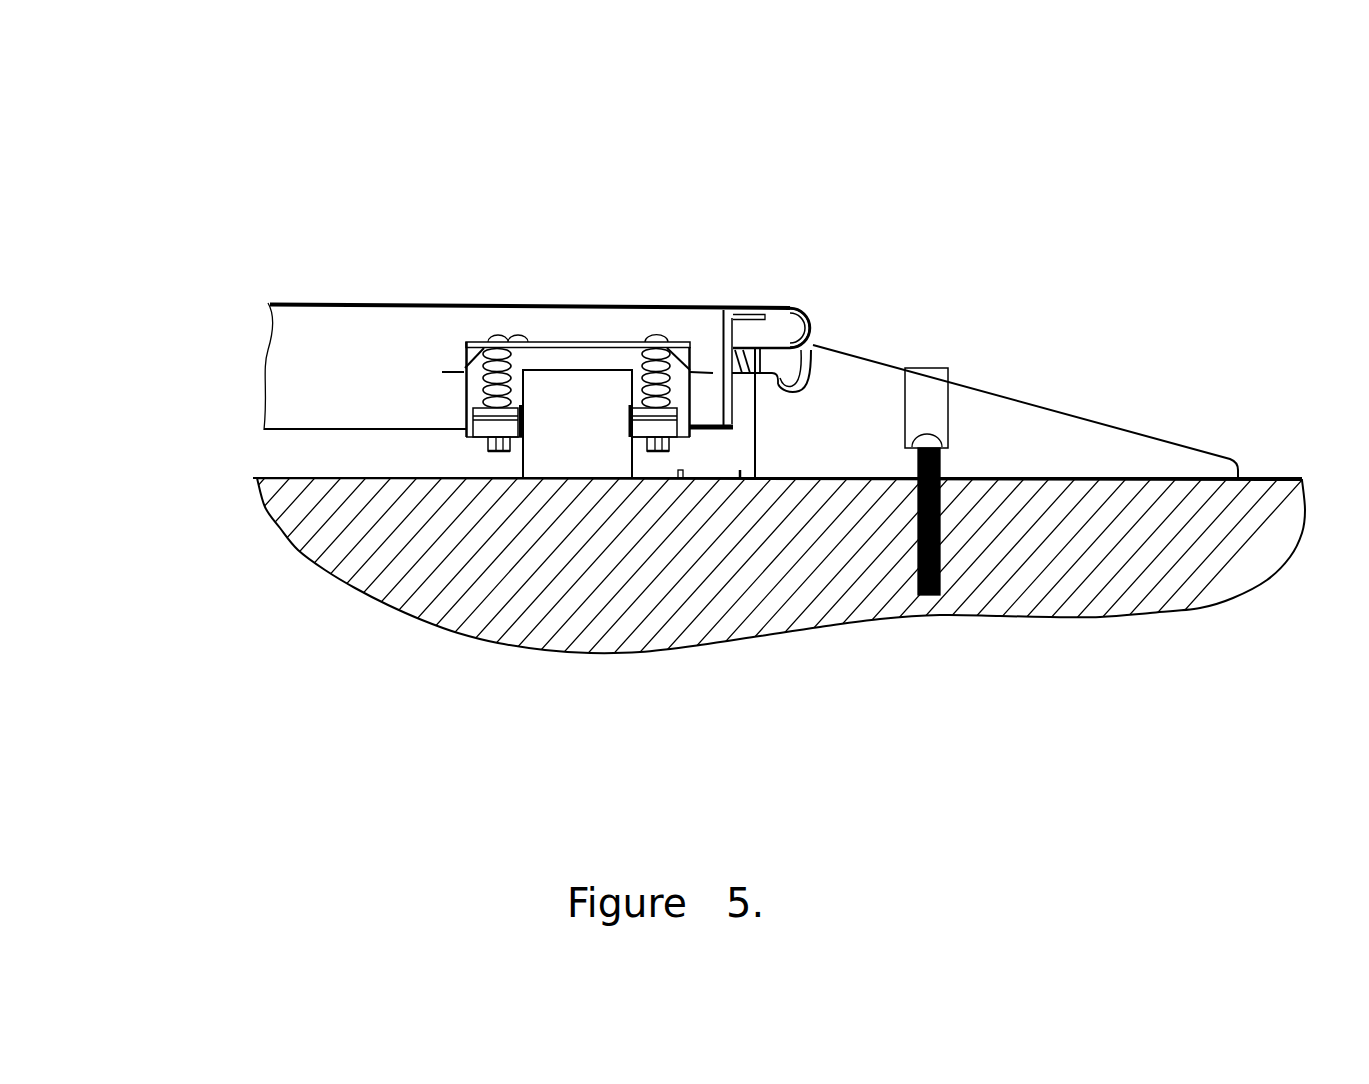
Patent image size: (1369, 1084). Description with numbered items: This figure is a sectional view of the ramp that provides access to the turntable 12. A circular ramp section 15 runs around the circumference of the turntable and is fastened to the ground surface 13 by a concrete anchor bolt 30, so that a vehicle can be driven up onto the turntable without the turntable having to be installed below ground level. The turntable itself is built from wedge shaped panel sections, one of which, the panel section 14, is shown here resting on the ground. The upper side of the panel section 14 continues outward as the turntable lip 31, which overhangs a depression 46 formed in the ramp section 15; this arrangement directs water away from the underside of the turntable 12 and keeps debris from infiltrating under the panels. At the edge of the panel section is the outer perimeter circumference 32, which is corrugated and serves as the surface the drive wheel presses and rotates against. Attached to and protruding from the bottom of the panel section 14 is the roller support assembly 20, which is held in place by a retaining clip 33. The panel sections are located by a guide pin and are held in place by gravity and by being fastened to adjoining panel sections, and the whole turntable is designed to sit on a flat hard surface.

The turntable 12 is at (240, 360).
The ground surface 13 is at (1092, 566).
The wedge shaped panel section 14 is at (326, 304).
The circular ramp section 15 is at (1114, 422).
The roller support assembly 20 is at (578, 340).
The concrete anchor bolt 30 is at (944, 597).
The turntable lip 31 is at (812, 316).
The outer perimeter circumference 32 is at (748, 404).
The retaining clip 33 is at (705, 371).
The depression 46 is at (813, 366).